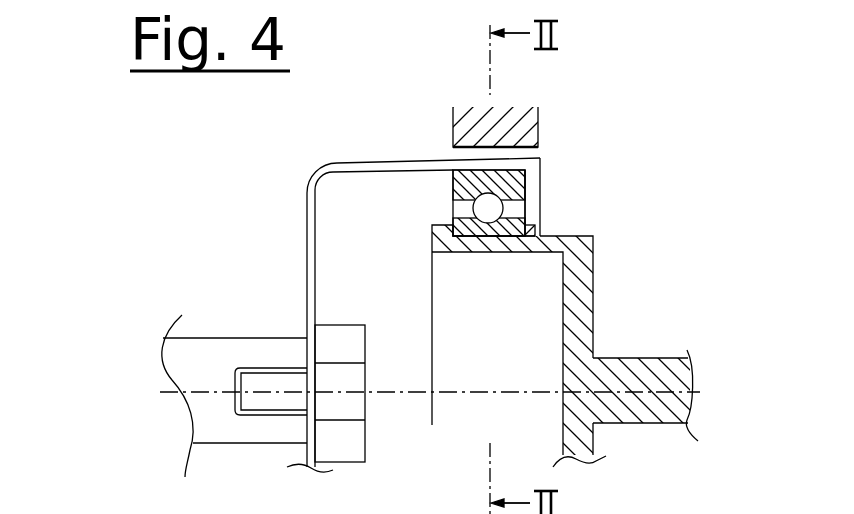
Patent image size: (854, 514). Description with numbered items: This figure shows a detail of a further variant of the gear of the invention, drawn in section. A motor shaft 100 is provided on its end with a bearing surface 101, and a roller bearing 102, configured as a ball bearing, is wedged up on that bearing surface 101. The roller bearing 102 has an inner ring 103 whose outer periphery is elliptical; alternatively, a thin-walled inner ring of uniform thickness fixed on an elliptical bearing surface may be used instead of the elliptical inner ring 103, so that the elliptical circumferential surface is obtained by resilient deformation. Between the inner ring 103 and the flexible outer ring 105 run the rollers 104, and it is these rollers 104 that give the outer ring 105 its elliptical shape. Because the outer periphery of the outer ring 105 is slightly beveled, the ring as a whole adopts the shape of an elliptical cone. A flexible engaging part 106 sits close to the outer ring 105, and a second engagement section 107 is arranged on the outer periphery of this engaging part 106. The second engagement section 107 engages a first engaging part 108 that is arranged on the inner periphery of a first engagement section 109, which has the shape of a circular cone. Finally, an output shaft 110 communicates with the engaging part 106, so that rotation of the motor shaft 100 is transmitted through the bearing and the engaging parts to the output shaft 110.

The motor shaft 100 is at (633, 370).
The bearing surface 101 is at (562, 233).
The roller bearing 102 is at (541, 197).
The inner ring 103 is at (430, 254).
The rollers 104 is at (482, 212).
The outer ring 105 is at (467, 185).
The engaging part 106 is at (352, 166).
The second engagement section 107 is at (538, 157).
The first engaging part 108 is at (462, 152).
The first engagement section 109 is at (528, 117).
The output shaft 110 is at (250, 350).